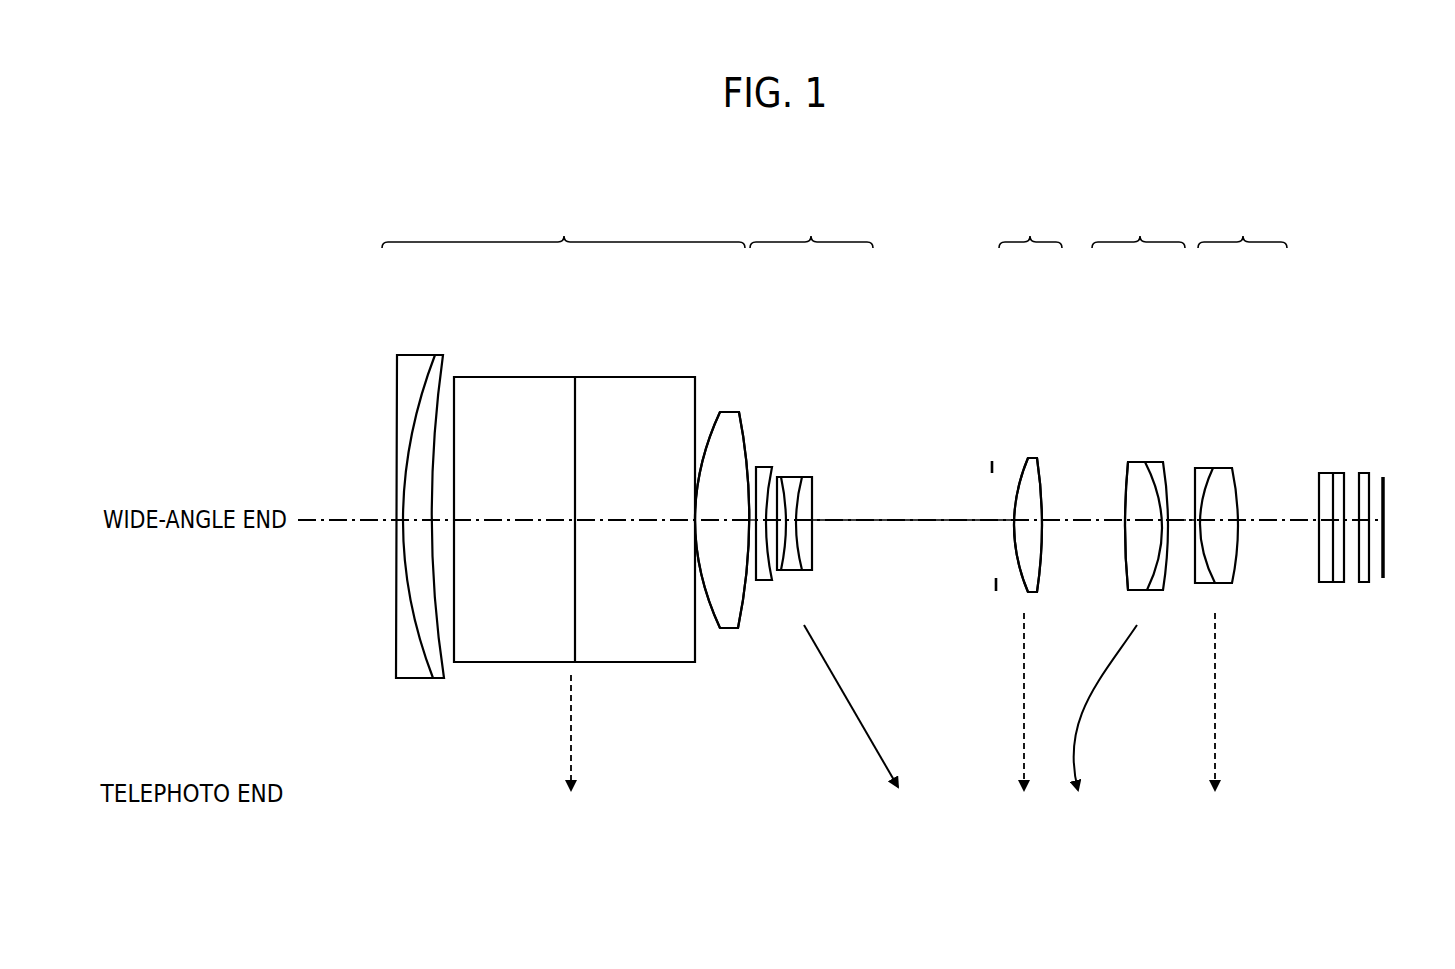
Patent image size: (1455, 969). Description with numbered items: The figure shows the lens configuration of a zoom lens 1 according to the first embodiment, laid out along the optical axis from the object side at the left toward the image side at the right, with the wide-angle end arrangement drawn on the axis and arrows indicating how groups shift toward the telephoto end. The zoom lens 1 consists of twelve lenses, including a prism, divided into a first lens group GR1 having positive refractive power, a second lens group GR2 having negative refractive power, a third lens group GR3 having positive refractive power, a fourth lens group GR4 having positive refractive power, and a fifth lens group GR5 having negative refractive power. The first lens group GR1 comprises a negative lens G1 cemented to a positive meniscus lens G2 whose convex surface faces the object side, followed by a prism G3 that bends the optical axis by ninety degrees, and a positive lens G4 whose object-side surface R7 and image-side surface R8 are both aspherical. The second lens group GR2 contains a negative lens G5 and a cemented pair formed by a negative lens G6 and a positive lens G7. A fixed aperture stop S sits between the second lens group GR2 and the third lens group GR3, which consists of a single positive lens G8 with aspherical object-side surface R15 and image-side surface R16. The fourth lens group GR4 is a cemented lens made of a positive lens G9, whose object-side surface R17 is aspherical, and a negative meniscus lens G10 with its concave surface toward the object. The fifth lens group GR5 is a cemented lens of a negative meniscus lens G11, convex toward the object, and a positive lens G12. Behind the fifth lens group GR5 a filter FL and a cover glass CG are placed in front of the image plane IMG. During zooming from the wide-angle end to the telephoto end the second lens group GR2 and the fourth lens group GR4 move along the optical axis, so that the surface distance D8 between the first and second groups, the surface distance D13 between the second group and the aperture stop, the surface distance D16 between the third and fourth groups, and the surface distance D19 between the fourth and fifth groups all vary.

The zoom lens 1 is at (510, 178).
The first lens group GR1 is at (563, 228).
The second lens group GR2 is at (811, 228).
The third lens group GR3 is at (1030, 228).
The fourth lens group GR4 is at (1138, 228).
The fifth lens group GR5 is at (1242, 228).
The negative lens G1 is at (412, 363).
The positive lens G2 is at (442, 360).
The optical member (prism) G3 is at (538, 387).
The positive lens G4 is at (728, 412).
The negative lens G5 is at (771, 467).
The negative lens G6 is at (800, 477).
The positive lens G7 is at (812, 477).
The positive lens G8 is at (1033, 458).
The positive lens G9 is at (1135, 462).
The negative lens G10 is at (1160, 462).
The negative lens G11 is at (1215, 468).
The positive lens G12 is at (1237, 468).
The aperture stop S is at (992, 468).
The object-side surface of positive lens G4 R7 is at (712, 622).
The image-side surface of positive lens G4 R8 is at (745, 622).
The object-side surface of positive lens G8 R15 is at (1020, 590).
The image-side surface of positive lens G8 R16 is at (1042, 580).
The object-side surface of positive lens G9 R17 is at (1127, 572).
The surface distance D8 is at (752, 578).
The surface distance D13 is at (878, 540).
The surface distance D16 is at (1088, 522).
The surface distance D19 is at (1183, 527).
The filter FL is at (1339, 472).
The cover glass CG is at (1365, 472).
The image plane IMG is at (1383, 478).